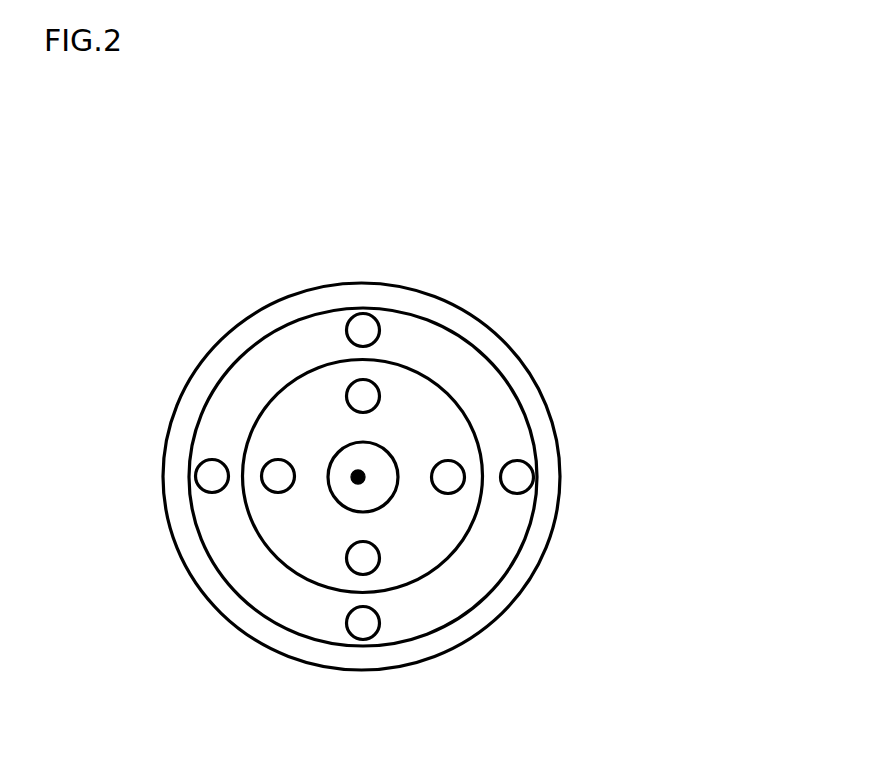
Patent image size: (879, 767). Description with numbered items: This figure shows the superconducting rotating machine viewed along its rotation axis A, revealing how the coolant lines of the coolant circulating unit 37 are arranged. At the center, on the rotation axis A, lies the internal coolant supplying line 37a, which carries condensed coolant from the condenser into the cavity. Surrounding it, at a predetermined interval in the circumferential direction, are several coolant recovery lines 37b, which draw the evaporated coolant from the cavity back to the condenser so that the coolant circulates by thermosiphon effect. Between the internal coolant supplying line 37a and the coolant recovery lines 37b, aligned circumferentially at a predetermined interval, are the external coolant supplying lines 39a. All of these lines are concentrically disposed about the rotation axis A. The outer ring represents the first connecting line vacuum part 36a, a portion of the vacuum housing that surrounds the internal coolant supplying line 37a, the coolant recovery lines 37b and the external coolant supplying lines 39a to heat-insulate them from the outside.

The first connecting line vacuum part 36a is at (462, 322).
The internal coolant supplying line 37a is at (382, 443).
The coolant recovery line 37b is at (517, 477).
The coolant circulating unit 37 is at (705, 395).
The external coolant supplying line 39a is at (448, 478).
The rotation axis A is at (357, 480).